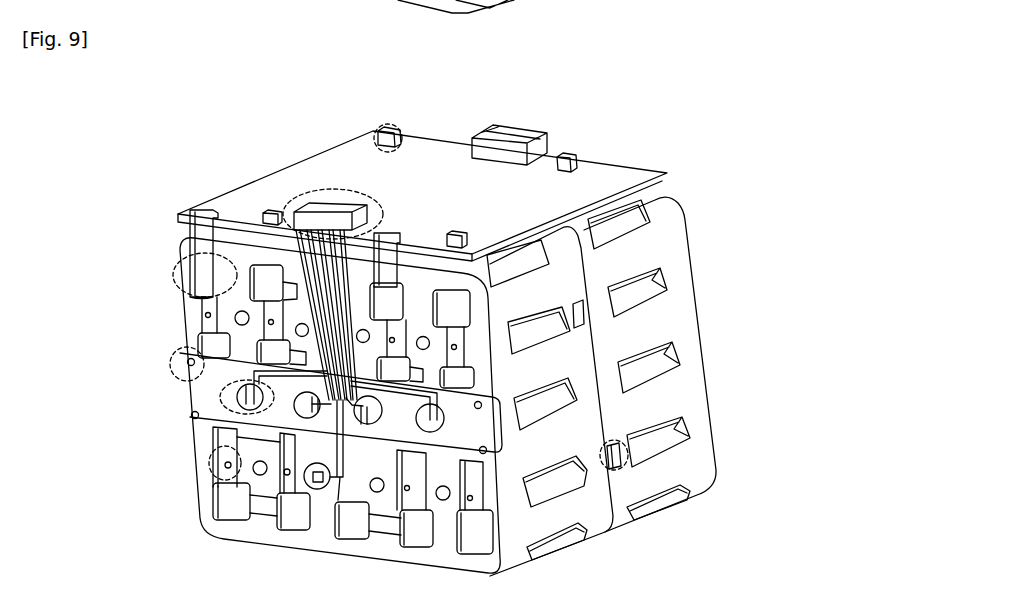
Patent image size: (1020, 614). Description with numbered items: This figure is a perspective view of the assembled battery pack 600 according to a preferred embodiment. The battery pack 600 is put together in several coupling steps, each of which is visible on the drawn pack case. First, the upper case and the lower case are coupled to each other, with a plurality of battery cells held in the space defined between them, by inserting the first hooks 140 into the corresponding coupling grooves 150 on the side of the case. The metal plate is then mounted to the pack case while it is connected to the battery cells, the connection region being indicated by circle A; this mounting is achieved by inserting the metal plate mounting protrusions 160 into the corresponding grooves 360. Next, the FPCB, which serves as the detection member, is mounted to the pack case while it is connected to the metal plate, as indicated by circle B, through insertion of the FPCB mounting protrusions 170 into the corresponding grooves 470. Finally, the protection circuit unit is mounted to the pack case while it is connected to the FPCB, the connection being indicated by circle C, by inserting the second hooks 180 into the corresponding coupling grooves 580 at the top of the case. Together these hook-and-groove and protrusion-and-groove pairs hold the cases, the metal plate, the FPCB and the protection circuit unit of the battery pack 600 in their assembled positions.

The battery pack 600 is at (147, 93).
The second hooks 180 is at (459, 100).
The coupling grooves 580 is at (393, 121).
The FPCB mounting protrusions 170 is at (266, 374).
The grooves 470 is at (173, 353).
The metal plate mounting protrusions 160 is at (146, 487).
The grooves 360 is at (210, 462).
The first hooks 140 is at (644, 380).
The coupling grooves 150 is at (628, 467).
The circle A is at (182, 250).
The circle B is at (187, 393).
The circle C is at (305, 192).